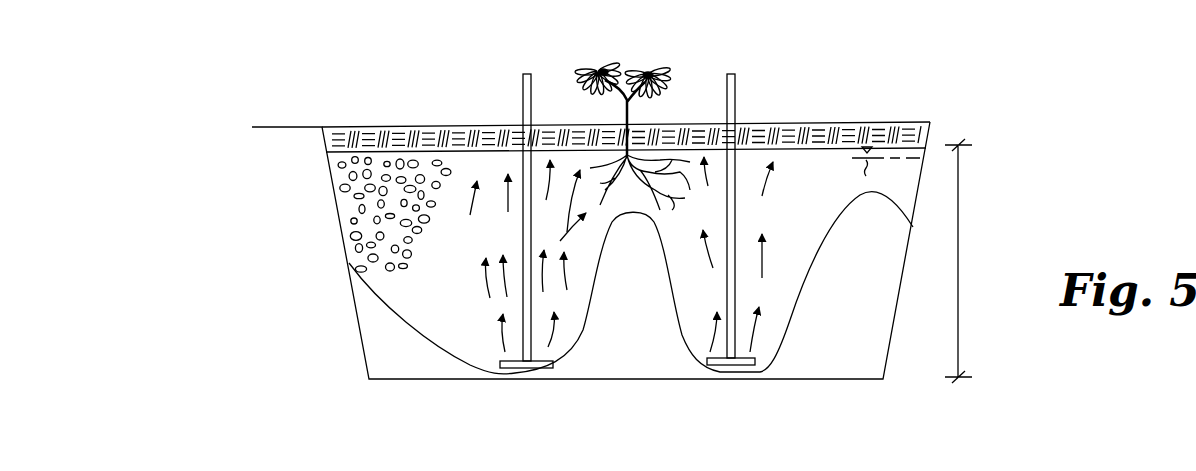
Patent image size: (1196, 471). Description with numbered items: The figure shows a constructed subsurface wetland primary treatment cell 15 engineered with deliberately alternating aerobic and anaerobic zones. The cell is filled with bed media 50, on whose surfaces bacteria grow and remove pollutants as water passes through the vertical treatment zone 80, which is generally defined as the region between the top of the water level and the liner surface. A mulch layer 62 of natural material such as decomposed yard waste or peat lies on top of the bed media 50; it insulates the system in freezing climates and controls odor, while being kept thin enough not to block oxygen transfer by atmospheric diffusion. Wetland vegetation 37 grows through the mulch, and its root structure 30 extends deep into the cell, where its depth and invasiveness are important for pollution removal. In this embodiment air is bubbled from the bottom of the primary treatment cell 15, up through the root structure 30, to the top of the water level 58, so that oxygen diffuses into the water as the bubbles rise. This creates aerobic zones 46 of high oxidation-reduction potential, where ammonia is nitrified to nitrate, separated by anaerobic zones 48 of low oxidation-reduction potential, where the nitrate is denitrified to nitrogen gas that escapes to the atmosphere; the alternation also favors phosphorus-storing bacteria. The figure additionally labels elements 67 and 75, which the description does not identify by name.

The primary treatment cell 15 is at (870, 385).
The root structure 30 is at (653, 187).
The wetland vegetation 37 is at (643, 70).
The aerobic zones 46 is at (560, 383).
The anaerobic zones 48 is at (654, 237).
The bed media 50 is at (415, 176).
The water level 58 is at (798, 150).
The mulch layer 62 is at (901, 119).
The aeration stake 67 is at (527, 71).
The air flow arrows 75 is at (624, 254).
The vertical treatment zone 80 is at (978, 261).